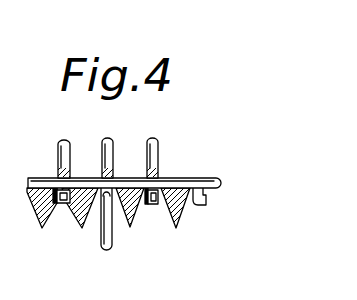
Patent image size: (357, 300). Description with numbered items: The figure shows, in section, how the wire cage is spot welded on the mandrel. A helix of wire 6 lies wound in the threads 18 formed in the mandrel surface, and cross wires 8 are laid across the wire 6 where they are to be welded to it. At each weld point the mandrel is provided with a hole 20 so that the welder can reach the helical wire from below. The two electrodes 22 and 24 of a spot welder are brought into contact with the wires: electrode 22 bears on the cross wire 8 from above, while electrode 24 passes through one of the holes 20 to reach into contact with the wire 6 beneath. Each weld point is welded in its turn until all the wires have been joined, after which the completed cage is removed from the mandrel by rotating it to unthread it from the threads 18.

The wire 6 is at (202, 179).
The cross wire 8 is at (159, 167).
The threads 18 is at (118, 200).
The holes 20 is at (68, 206).
The electrode 22 is at (103, 143).
The electrode 24 is at (98, 242).